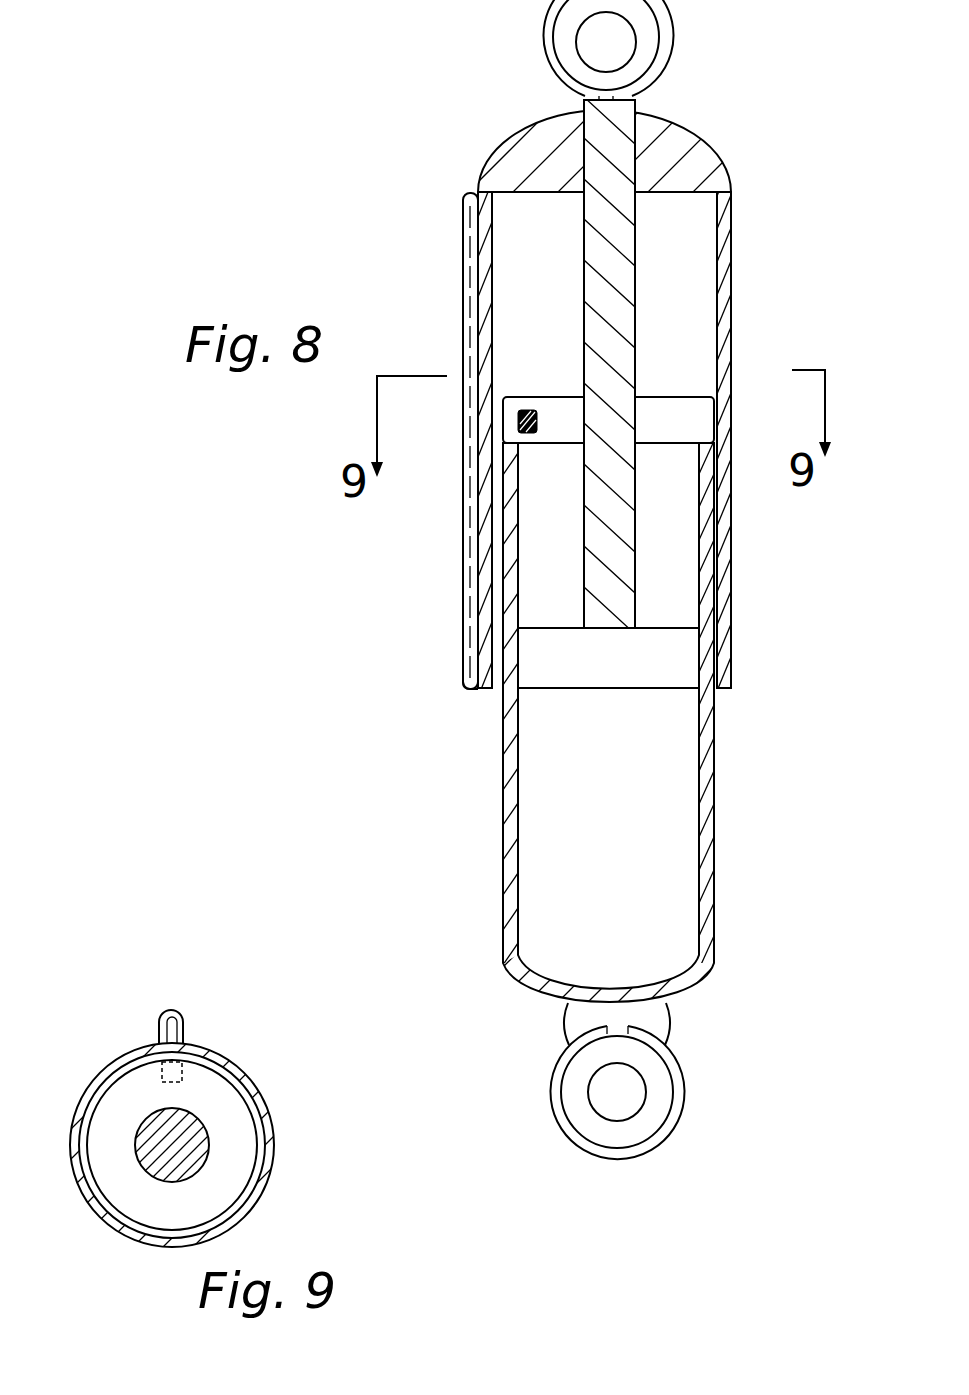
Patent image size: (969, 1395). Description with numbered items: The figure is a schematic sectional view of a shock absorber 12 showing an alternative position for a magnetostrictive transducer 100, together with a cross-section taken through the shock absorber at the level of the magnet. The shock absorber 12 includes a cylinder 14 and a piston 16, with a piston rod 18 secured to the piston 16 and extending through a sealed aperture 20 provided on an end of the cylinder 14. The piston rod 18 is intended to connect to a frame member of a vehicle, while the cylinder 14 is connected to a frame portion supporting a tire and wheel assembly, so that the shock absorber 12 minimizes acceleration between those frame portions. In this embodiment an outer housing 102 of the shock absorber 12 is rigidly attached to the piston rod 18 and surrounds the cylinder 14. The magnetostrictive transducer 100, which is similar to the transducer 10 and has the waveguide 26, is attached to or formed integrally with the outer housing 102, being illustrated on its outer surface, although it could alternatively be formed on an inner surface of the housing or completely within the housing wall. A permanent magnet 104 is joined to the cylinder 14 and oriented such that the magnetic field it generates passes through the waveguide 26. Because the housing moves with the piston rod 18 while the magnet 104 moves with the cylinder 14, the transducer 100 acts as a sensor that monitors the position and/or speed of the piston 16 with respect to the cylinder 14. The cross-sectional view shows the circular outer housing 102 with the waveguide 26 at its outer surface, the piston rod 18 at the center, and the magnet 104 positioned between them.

In FIG. 8, the magnetostrictive transducer 10 is at (632, 223).
In FIG. 8, the shock absorber 12 is at (746, 184).
In FIG. 8, the cylinder 14 is at (713, 709).
In FIG. 8, the piston 16 is at (670, 643).
In FIG. 8, the piston rod 18 is at (615, 543).
In FIG. 9, the piston rod 18 is at (210, 1143).
In FIG. 8, the sealed aperture 20 is at (663, 397).
In FIG. 8, the waveguide 26 is at (473, 655).
In FIG. 9, the waveguide 26 is at (176, 1034).
In FIG. 8, the magnetostrictive transducer 100 is at (462, 210).
In FIG. 9, the outer housing 102 is at (233, 1067).
In FIG. 8, the permanent magnet 104 is at (518, 417).
In FIG. 9, the permanent magnet 104 is at (162, 1078).